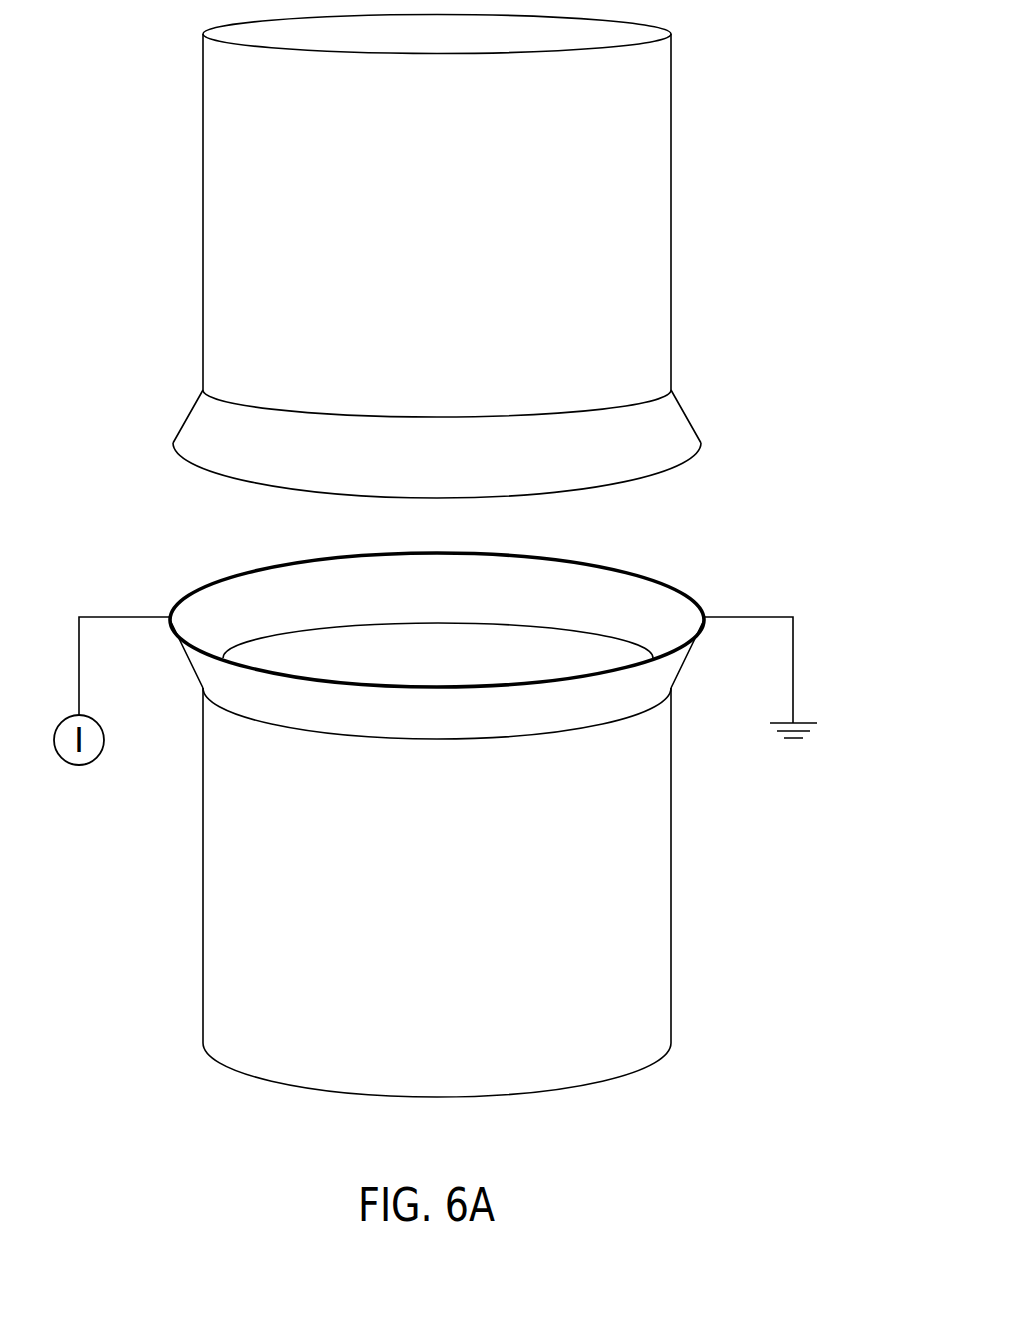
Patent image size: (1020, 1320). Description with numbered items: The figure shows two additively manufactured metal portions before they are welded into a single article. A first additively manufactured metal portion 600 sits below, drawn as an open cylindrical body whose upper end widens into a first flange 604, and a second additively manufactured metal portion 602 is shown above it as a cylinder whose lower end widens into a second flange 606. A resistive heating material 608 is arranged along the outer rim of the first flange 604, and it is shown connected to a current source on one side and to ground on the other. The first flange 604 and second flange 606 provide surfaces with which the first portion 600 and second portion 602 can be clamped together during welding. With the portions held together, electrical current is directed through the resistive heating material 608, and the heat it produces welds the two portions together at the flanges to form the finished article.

The first additively manufactured metal portion 600 is at (673, 880).
The second additively manufactured metal portion 602 is at (673, 210).
The first flange 604 is at (670, 669).
The second flange 606 is at (675, 431).
The resistive heating material 608 is at (652, 578).